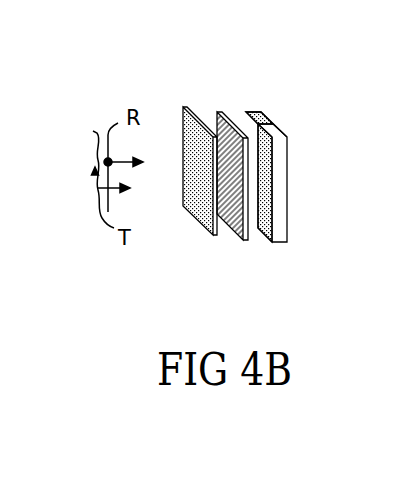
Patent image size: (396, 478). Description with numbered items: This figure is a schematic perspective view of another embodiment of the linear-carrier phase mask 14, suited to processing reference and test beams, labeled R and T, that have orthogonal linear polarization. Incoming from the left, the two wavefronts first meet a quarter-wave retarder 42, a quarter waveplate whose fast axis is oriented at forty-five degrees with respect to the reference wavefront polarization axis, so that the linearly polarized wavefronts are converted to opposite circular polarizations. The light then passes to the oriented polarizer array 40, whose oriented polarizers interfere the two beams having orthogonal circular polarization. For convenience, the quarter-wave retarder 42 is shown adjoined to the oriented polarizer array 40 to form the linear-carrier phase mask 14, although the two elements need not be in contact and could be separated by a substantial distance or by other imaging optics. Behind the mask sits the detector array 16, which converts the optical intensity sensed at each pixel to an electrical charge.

The linear-carrier phase mask 14 is at (233, 120).
The quarter-wave retarder 42 is at (202, 227).
The oriented polarizer array 40 is at (245, 242).
The detector array 16 is at (286, 244).